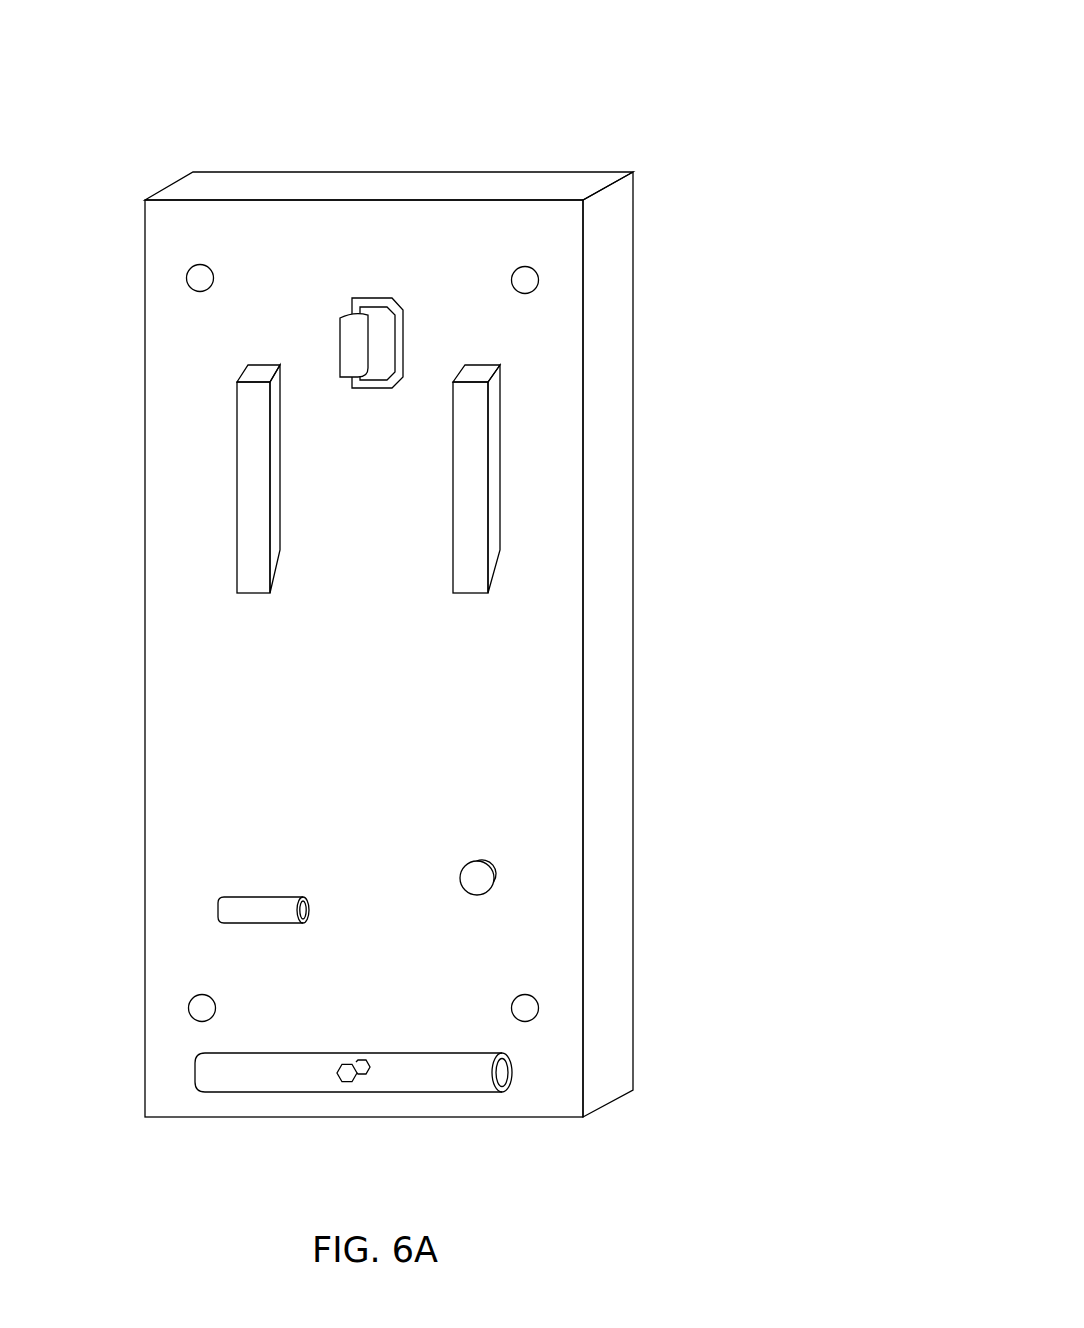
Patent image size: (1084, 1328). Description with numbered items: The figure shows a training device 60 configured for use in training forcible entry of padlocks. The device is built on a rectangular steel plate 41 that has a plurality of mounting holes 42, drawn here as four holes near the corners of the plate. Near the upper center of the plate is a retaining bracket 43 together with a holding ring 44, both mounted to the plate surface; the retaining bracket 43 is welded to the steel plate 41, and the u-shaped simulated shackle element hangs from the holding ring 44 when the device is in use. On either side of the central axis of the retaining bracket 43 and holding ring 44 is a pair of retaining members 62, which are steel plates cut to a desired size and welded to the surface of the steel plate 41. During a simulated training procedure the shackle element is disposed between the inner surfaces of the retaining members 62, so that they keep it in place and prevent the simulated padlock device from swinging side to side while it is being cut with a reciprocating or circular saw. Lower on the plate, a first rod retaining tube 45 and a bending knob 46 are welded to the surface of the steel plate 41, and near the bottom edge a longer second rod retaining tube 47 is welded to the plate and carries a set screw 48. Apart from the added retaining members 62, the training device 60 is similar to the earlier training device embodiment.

The training device 60 is at (718, 91).
The rectangular steel plate 41 is at (555, 372).
The mounting holes 42 is at (187, 278).
The retaining bracket 43 is at (353, 367).
The holding ring 44 is at (405, 357).
The first rod retaining tube 45 is at (265, 897).
The bending knob 46 is at (477, 870).
The second rod retaining tube 47 is at (287, 1065).
The set screw 48 is at (347, 1082).
The retaining members 62 is at (270, 533).